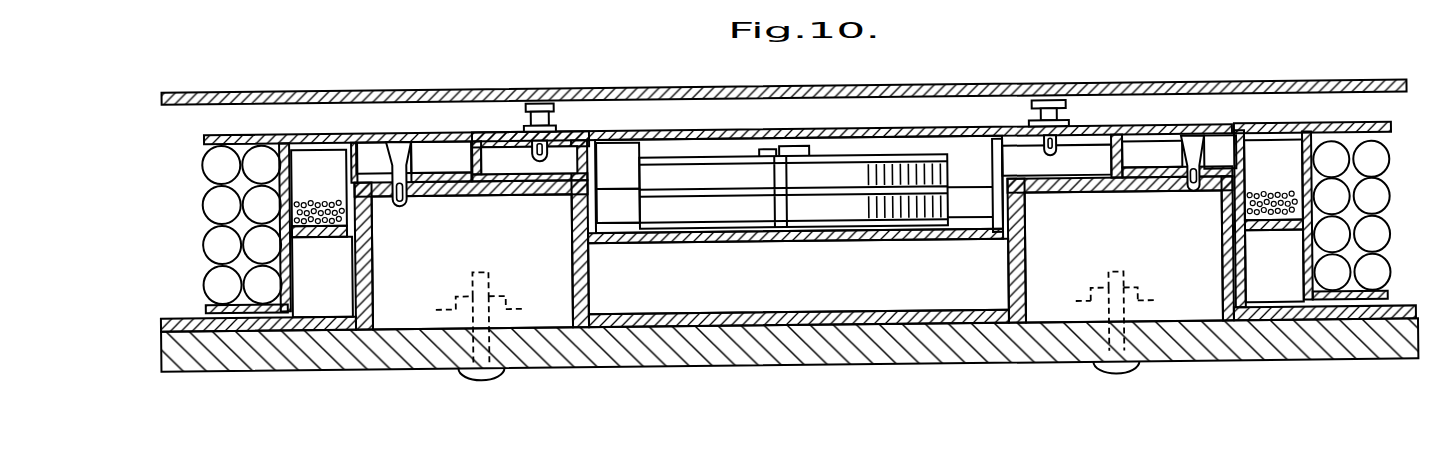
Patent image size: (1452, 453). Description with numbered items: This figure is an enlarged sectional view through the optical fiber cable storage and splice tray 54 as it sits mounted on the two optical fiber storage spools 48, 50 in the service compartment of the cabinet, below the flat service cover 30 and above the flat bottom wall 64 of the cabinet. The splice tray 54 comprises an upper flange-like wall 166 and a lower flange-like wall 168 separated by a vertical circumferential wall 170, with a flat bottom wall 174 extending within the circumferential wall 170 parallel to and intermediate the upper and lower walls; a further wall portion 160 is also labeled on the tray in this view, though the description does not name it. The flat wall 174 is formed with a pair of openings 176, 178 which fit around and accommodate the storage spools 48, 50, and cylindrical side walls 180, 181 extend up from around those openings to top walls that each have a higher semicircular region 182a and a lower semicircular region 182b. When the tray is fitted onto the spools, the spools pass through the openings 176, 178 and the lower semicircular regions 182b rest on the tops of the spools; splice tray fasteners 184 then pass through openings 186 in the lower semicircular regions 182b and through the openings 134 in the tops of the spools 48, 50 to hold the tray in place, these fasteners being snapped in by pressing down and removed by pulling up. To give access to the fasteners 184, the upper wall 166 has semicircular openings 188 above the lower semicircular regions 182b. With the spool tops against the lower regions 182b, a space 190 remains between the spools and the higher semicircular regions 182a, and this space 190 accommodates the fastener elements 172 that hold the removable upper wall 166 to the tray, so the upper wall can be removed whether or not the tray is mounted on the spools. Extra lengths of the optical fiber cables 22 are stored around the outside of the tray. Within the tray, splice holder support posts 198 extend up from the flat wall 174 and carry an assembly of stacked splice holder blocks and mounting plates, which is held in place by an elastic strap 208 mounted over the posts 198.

The optical fiber cables 22 is at (217, 195).
The service cover 30 is at (923, 87).
The optical fiber storage spool 48 is at (1012, 287).
The optical fiber storage spool 50 is at (587, 291).
The splice tray 54 is at (1420, 148).
The flat bottom wall 64 is at (345, 369).
The opening 134 is at (413, 204).
The right cover bar 160 is at (1337, 131).
The upper flange-like wall 166 is at (697, 131).
The lower flange-like wall 168 is at (207, 305).
The vertical circumferential wall 170 is at (290, 293).
The fastener elements 172 is at (548, 101).
The flat bottom wall 174 is at (297, 240).
The opening 176 is at (1005, 241).
The opening 178 is at (595, 242).
The cylindrical side wall 180 is at (350, 179).
The cylindrical side wall 181 is at (613, 175).
The higher semicircular region 182a is at (507, 123).
The lower semicircular region 182b is at (440, 193).
The splice tray fasteners 184 is at (388, 133).
The opening 186 is at (410, 170).
The semicircular opening 188 is at (440, 133).
The space 190 is at (497, 193).
The splice holder support posts 198 is at (793, 180).
The elastic strap 208 is at (763, 151).